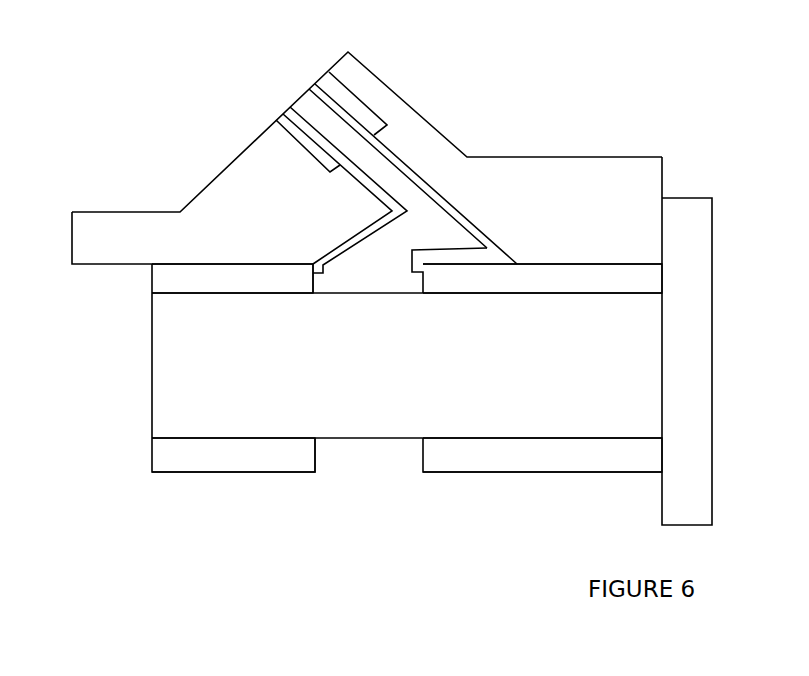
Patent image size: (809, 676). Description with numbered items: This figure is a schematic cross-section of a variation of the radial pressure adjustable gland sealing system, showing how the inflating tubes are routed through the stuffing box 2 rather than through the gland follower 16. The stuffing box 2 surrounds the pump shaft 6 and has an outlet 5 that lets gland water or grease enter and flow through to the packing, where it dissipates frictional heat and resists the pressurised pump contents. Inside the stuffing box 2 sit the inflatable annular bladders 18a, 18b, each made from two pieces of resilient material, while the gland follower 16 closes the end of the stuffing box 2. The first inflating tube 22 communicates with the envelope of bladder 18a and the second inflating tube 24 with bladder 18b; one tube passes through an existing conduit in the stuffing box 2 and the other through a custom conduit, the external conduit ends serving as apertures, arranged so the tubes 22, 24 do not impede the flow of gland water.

The stuffing box 2 is at (553, 186).
The outlet 5 is at (298, 108).
The shaft 6 is at (407, 365).
The gland follower 16 is at (713, 358).
The inflatable annular bladder 18a is at (238, 283).
The inflatable annular bladder 18b is at (545, 281).
The first inflating tube 22 is at (283, 112).
The second inflating tube 24 is at (318, 97).